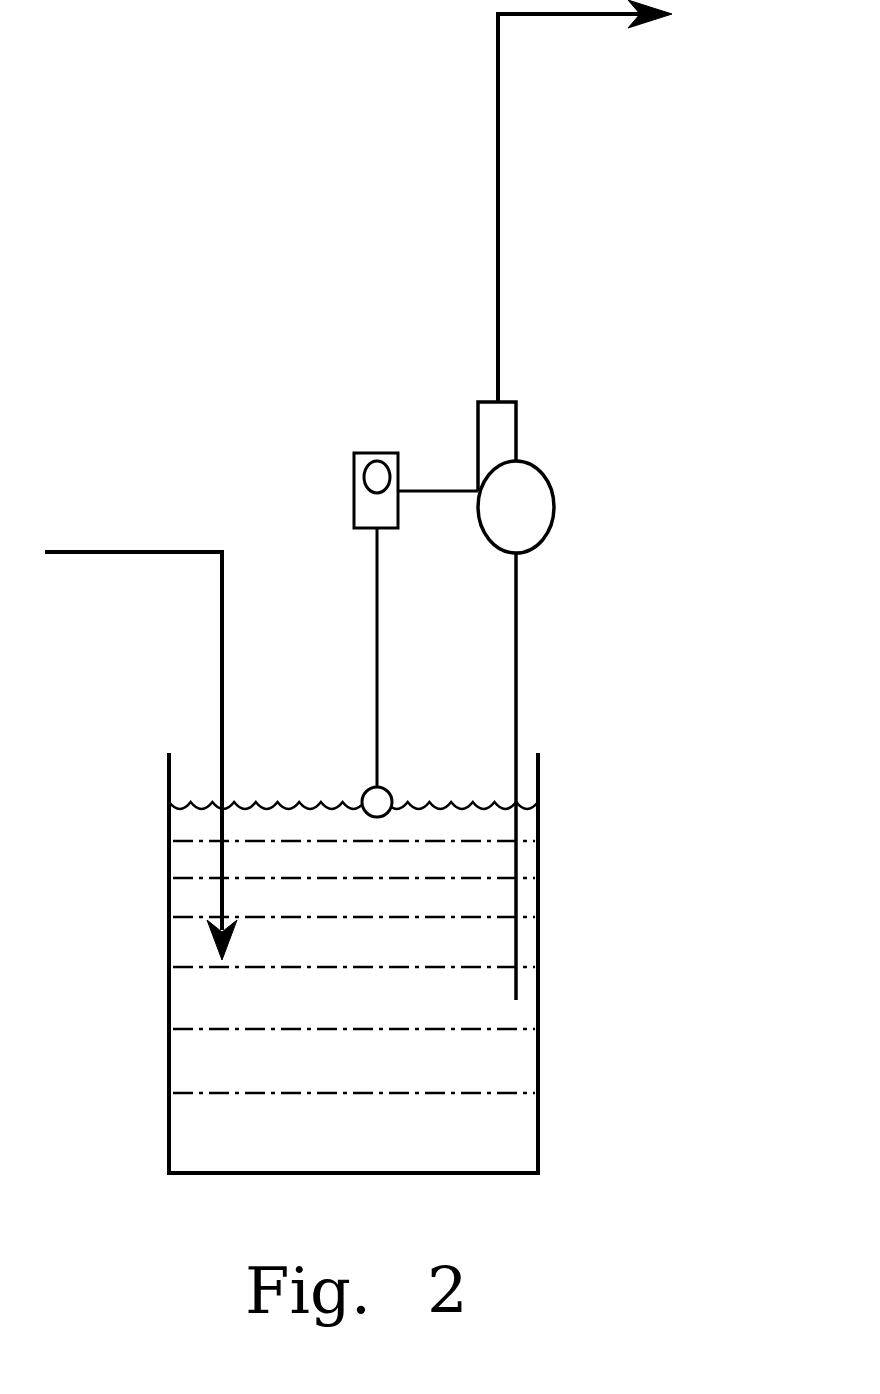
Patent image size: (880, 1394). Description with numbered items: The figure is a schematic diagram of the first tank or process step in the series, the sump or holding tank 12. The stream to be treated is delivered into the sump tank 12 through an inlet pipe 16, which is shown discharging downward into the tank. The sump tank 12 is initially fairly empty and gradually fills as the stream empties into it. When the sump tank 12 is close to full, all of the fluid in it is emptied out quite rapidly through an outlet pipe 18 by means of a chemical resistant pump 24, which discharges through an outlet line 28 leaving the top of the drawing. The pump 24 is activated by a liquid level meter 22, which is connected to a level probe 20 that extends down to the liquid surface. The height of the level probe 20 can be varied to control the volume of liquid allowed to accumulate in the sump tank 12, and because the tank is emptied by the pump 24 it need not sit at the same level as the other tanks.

The sump tank 12 is at (200, 385).
The inlet pipe 16 is at (124, 552).
The outlet pipe 18 is at (516, 638).
The level probe 20 is at (377, 657).
The liquid level meter 22 is at (377, 453).
The chemical resistant pump 24 is at (506, 433).
The outlet line 28 is at (498, 190).